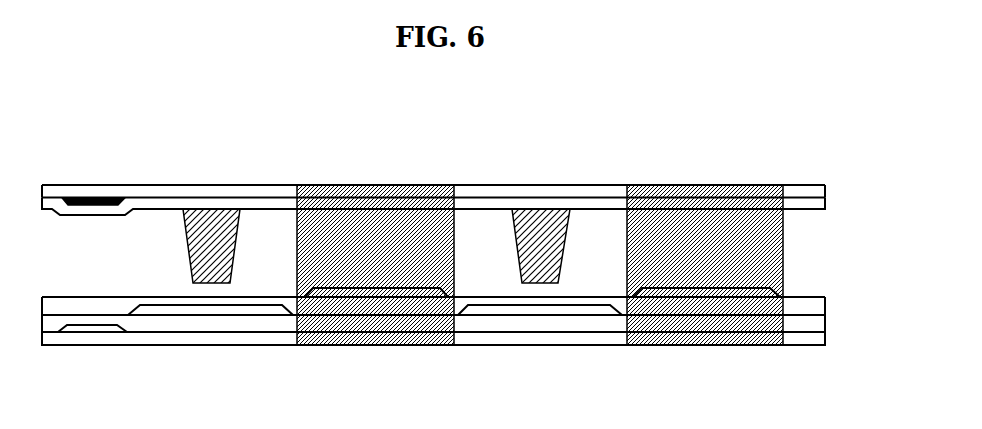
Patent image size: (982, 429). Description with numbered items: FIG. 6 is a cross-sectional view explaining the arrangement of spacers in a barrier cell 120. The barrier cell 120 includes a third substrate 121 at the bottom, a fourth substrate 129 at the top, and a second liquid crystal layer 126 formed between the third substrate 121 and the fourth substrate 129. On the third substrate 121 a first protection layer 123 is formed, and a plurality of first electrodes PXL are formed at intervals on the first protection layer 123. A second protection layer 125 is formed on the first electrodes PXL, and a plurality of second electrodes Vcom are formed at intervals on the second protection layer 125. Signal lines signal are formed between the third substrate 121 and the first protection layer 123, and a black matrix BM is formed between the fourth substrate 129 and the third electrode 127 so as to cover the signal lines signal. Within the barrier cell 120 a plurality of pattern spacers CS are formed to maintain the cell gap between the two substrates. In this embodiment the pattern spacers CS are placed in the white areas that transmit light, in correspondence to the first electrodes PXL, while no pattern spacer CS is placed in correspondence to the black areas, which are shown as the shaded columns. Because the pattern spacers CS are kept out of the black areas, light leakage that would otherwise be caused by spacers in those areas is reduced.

The barrier cell 120 is at (481, 78).
The fourth substrate 129 is at (820, 193).
The third electrode 127 is at (820, 203).
The second liquid crystal layer 126 is at (825, 209).
The second protection layer 125 is at (820, 303).
The first protection layer 123 is at (820, 325).
The third substrate 121 is at (820, 342).
The black matrix BM is at (104, 197).
The pattern spacer CS is at (207, 209).
The first electrode PXL is at (257, 312).
The second electrode Vcom is at (387, 296).
The signal line signal is at (97, 330).